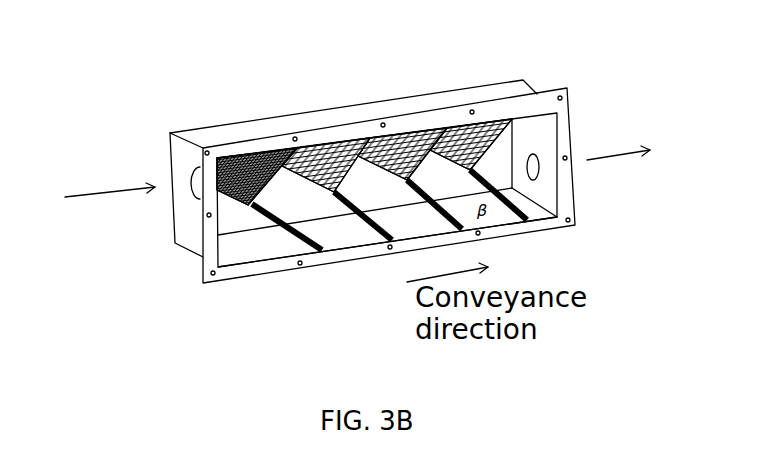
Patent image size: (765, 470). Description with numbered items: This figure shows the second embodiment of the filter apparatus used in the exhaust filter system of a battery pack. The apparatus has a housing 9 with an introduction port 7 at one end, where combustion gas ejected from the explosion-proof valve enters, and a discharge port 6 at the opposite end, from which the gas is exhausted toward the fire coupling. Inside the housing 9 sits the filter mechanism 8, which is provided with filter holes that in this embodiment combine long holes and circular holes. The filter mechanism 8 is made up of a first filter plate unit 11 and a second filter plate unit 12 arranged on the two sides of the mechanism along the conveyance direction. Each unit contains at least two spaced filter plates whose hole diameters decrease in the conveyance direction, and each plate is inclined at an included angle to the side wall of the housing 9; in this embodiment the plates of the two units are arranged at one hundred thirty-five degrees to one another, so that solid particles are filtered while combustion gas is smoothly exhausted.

The discharge port 6 is at (537, 168).
The introduction port 7 is at (196, 170).
The filter mechanism 8 is at (423, 143).
The housing 9 is at (355, 123).
The first filter plate unit 11 is at (273, 160).
The second filter plate unit 12 is at (370, 233).